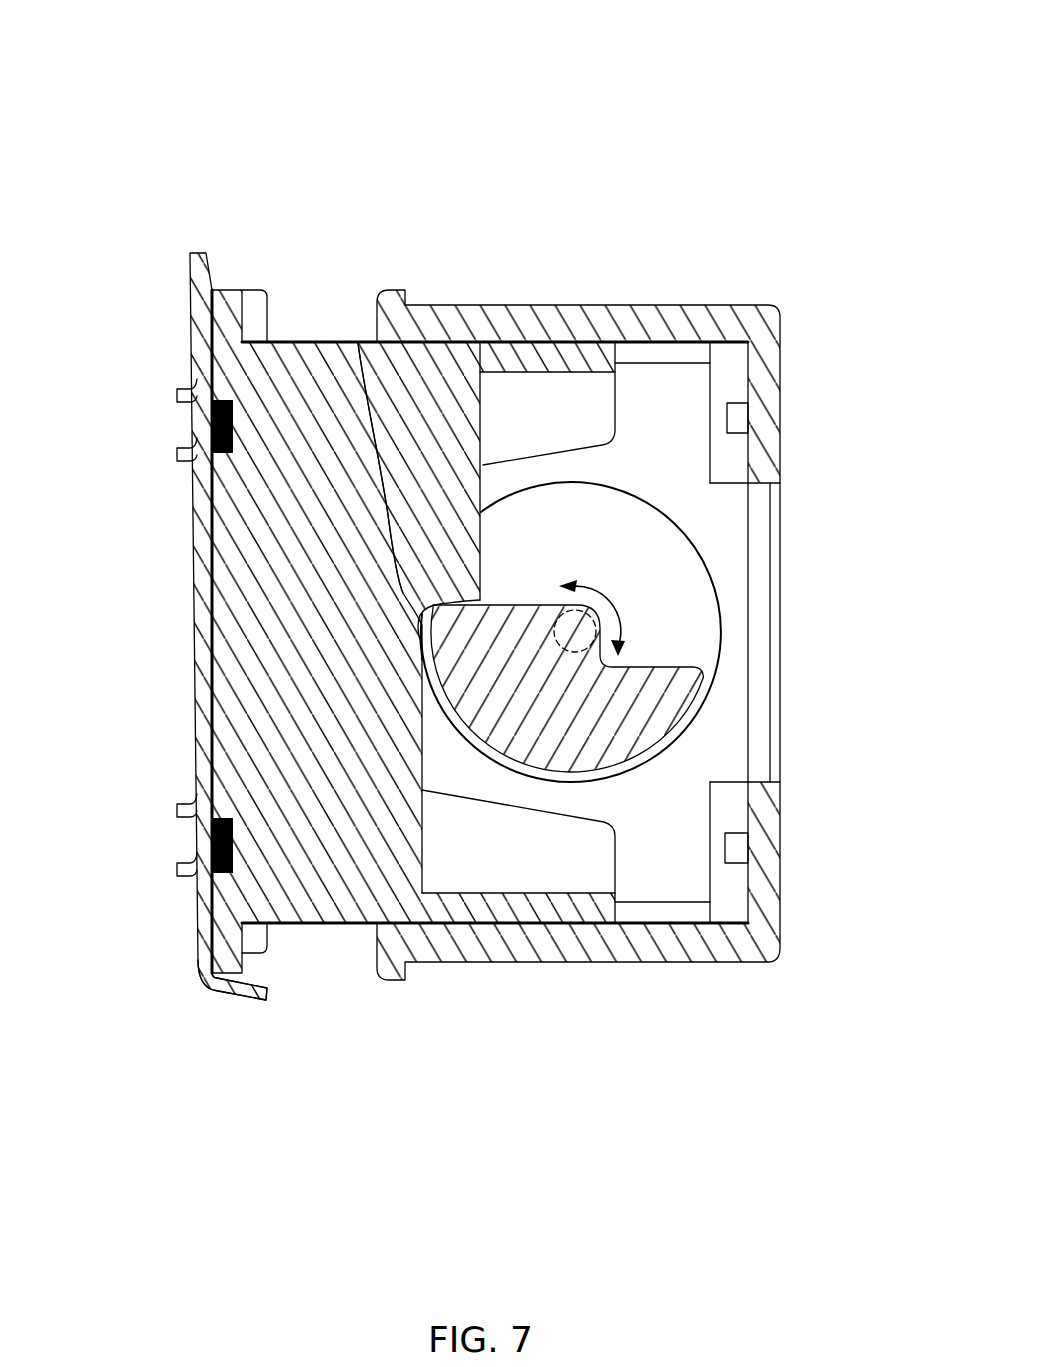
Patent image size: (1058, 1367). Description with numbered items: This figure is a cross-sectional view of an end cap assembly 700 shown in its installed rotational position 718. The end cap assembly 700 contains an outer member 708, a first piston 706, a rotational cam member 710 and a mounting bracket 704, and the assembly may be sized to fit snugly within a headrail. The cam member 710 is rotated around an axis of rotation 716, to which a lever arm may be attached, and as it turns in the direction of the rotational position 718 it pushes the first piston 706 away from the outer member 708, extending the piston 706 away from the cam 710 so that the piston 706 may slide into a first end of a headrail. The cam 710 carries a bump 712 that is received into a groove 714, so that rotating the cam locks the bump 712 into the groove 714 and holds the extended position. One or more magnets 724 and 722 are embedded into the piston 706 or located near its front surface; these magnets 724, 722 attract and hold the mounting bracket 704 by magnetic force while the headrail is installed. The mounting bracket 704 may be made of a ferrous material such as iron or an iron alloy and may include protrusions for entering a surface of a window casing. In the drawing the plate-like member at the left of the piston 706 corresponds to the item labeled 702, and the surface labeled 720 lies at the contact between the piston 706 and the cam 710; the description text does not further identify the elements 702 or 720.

The end cap assembly 700 is at (122, 68).
The mounting plate 702 is at (193, 528).
The mounting bracket 704 is at (238, 990).
The first piston 706 is at (340, 883).
The outer member 708 is at (538, 950).
The cam member 710 is at (650, 697).
The bump 712 is at (438, 550).
The groove 714 is at (358, 343).
The axis of rotation 716 is at (580, 631).
The installed rotational position 718 is at (624, 602).
The outer circular surface 720 is at (478, 600).
The magnet 722 is at (209, 832).
The magnet 724 is at (210, 427).